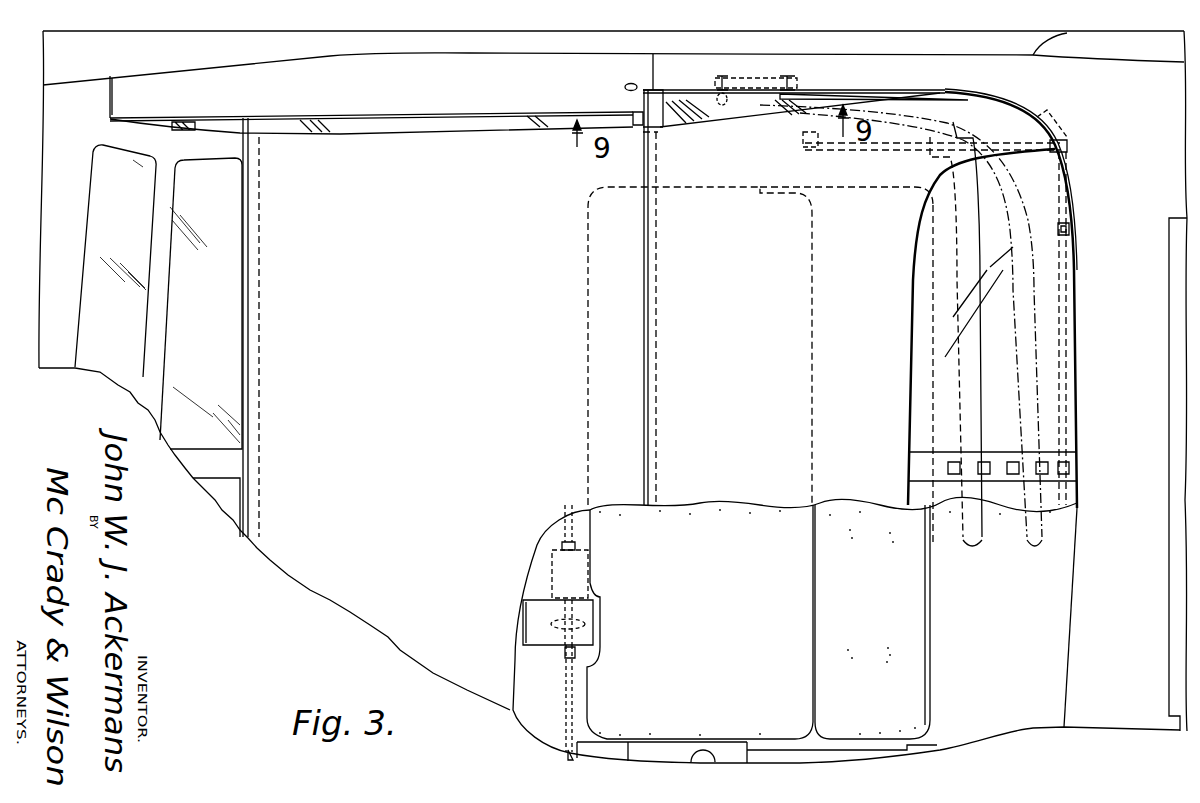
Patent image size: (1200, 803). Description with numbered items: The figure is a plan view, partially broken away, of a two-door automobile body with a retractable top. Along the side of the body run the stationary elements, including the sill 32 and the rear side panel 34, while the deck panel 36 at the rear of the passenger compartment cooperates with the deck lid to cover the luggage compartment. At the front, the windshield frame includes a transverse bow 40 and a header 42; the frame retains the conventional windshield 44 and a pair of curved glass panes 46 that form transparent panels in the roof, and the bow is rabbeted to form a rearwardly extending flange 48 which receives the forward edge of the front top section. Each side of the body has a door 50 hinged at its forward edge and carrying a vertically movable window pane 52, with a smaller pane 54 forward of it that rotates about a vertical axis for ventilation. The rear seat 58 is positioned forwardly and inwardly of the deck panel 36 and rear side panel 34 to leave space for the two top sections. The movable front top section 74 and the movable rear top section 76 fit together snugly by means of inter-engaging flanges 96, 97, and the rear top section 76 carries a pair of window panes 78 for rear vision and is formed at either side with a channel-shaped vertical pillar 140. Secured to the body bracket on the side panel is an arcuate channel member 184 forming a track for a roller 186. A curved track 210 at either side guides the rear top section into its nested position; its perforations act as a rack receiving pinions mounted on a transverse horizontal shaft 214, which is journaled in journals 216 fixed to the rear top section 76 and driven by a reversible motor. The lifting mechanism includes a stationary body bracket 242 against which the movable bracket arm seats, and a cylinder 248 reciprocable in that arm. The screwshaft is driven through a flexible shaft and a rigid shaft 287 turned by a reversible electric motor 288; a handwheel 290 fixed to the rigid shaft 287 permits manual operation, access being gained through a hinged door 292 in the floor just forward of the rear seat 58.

The sill 32 is at (478, 36).
The rear side panel 34 is at (905, 58).
The deck panel 36 is at (1103, 722).
The transverse bow 40 is at (247, 217).
The header 42 is at (157, 315).
The windshield 44 is at (115, 261).
The curved glass panes 46 is at (205, 325).
The rearwardly extending flange 48 is at (258, 290).
The door 50 is at (284, 94).
The window pane 52 is at (348, 122).
The smaller pane 54 is at (198, 123).
The rear seat 58 is at (827, 260).
The movable front top section 74 is at (963, 228).
The movable rear top section 76 is at (1023, 210).
The window panes 78 is at (917, 350).
The inter-engaging flange 96 is at (656, 343).
The inter-engaging flange 97 is at (650, 253).
The vertical pillar 140 is at (643, 100).
The channel member 184 is at (743, 78).
The roller 186 is at (796, 84).
The curved track 210 is at (843, 152).
The transverse horizontal shaft 214 is at (1075, 275).
The journals 216 is at (1071, 229).
The stationary body bracket 242 is at (653, 757).
The cylinder 248 is at (707, 763).
The rigid shaft 287 is at (580, 527).
The reversible electric motor 288 is at (588, 568).
The handwheel 290 is at (598, 628).
The hinged door 292 is at (527, 630).